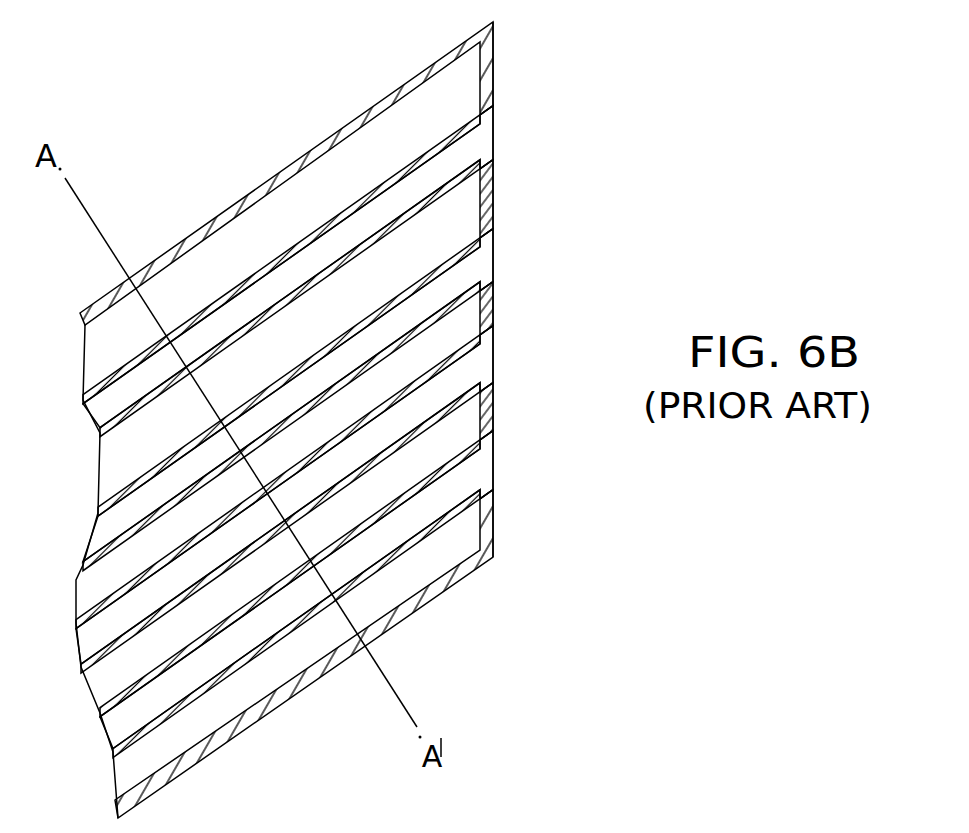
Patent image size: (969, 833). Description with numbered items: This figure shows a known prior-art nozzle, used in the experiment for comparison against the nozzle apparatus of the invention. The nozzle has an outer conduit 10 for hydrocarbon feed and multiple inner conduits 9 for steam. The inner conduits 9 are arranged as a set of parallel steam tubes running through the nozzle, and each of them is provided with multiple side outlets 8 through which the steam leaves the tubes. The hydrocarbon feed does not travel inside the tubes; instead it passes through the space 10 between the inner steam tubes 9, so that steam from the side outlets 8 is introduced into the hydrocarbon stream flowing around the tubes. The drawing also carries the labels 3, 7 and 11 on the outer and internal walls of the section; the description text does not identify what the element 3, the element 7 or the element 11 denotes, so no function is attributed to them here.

The top wall 3 is at (243, 198).
The channel 7 is at (377, 215).
The side outlets 8 is at (287, 307).
The inner conduits 9 is at (300, 250).
The outer conduit 10 is at (404, 147).
The bottom wall 11 is at (288, 698).